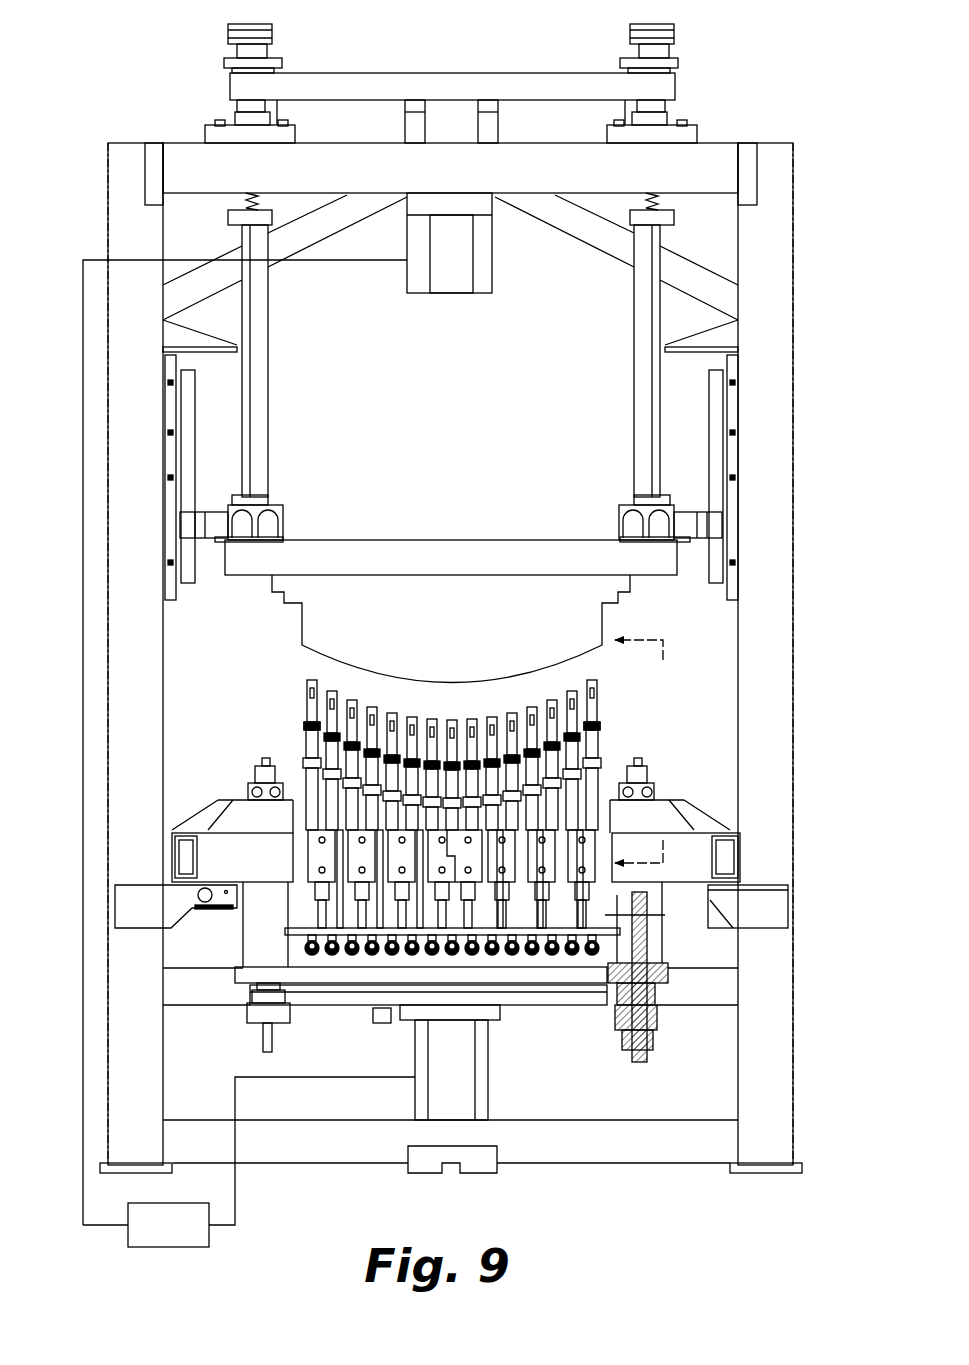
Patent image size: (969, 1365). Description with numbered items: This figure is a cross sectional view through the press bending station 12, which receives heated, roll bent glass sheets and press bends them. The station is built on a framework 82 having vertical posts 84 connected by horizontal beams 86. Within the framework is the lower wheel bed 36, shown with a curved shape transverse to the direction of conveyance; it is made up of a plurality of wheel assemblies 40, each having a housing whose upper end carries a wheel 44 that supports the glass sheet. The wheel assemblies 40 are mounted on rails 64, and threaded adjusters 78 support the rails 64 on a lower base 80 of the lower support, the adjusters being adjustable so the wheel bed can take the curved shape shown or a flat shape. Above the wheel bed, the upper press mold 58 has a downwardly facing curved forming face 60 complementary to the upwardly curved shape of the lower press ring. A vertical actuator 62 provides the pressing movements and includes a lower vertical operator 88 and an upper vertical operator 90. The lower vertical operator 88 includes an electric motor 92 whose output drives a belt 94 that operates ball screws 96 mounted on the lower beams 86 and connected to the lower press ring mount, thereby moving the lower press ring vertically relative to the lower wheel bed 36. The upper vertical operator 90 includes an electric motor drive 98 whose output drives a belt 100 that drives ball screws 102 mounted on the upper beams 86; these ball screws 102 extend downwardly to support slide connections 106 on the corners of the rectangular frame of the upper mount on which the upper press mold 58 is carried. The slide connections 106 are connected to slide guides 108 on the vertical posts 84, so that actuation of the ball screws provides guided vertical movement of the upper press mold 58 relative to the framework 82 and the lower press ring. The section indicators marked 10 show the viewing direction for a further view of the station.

The section line / viewing direction 10 is at (657, 748).
The press bending station 12 is at (800, 345).
The lower wheel bed 36 is at (461, 713).
The wheel assemblies 40 is at (418, 712).
The wheel 44 is at (312, 690).
The upper press mold 58 is at (320, 618).
The curved forming face 60 is at (595, 682).
The vertical actuator 62 is at (178, 1249).
The rails 64 is at (560, 725).
The threaded adjusters 78 is at (330, 895).
The lower base 80 is at (505, 937).
The framework 82 is at (787, 457).
The vertical posts 84 is at (127, 652).
The horizontal beams 86 is at (708, 167).
The lower vertical operator 88 is at (495, 1098).
The upper vertical operator 90 is at (497, 268).
The electric motor 92 is at (437, 1047).
The belt 94 is at (308, 1007).
The ball screws 96 is at (247, 950).
The electric motor drive 98 is at (438, 283).
The belt 100 is at (308, 87).
The ball screws 102 is at (240, 203).
The slide connections 106 is at (280, 523).
The slide guides 108 is at (175, 522).